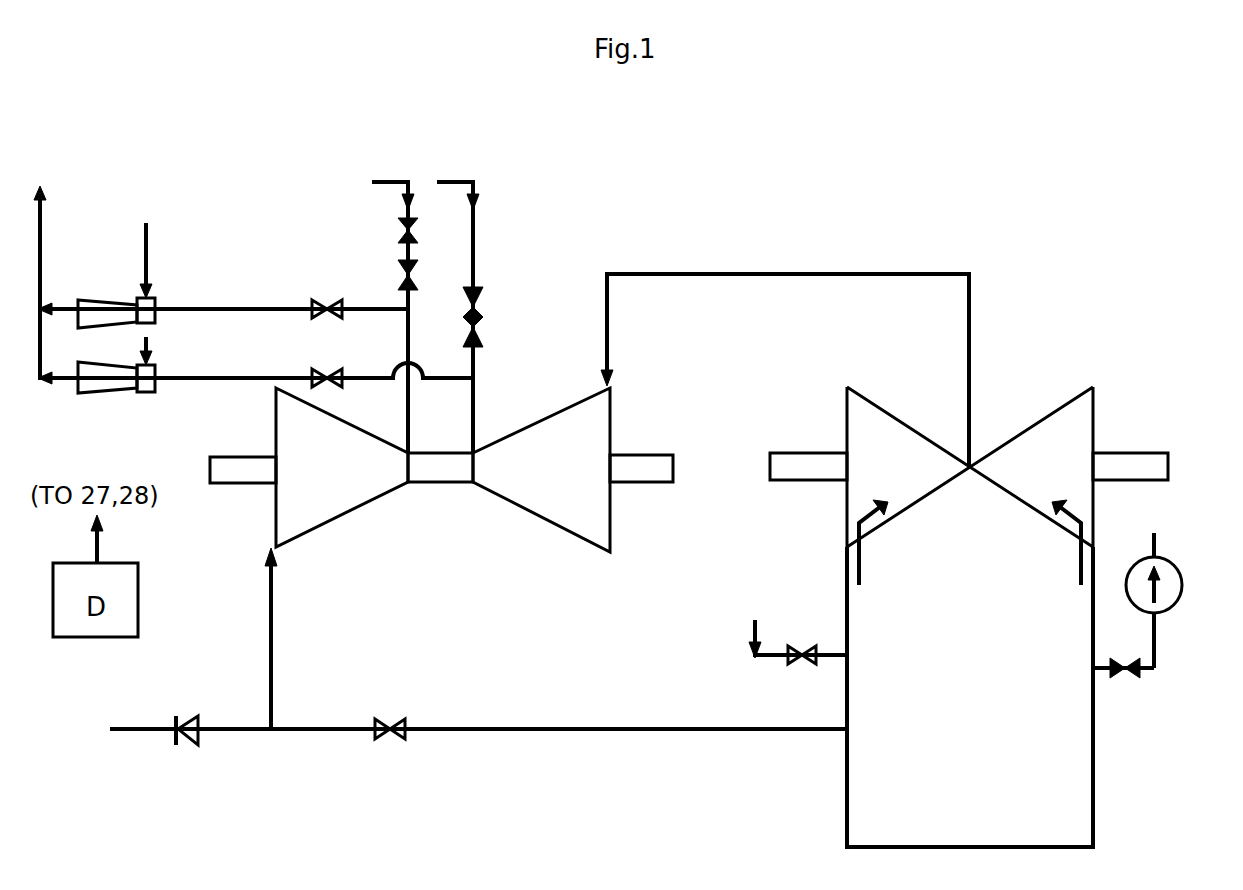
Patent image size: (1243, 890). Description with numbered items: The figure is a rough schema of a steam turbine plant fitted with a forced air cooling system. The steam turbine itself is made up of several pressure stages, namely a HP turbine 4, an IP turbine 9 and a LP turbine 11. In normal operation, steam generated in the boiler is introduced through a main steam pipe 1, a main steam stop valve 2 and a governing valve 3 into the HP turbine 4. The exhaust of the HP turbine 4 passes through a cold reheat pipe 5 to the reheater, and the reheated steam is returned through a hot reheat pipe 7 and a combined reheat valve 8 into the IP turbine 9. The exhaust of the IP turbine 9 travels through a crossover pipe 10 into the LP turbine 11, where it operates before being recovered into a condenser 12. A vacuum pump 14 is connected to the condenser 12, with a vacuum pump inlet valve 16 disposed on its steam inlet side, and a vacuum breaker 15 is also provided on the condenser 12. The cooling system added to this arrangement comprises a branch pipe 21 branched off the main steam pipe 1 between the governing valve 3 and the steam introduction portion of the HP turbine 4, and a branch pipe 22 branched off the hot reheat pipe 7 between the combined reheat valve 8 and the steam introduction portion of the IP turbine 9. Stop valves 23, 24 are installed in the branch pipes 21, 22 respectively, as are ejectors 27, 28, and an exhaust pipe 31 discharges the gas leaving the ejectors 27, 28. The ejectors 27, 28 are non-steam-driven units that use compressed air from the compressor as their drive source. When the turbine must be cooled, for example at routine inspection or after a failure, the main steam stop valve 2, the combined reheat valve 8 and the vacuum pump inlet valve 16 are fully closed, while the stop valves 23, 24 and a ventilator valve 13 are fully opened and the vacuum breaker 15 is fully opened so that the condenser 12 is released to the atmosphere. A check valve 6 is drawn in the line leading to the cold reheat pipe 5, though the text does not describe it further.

The main steam pipe 1 is at (406, 209).
The main steam stop valve 2 is at (406, 245).
The governing valve 3 is at (406, 283).
The HP turbine 4 is at (366, 505).
The cold reheat pipe 5 is at (273, 628).
The check valve 6 is at (197, 746).
The hot reheat pipe 7 is at (474, 253).
The combined reheat valve 8 is at (477, 303).
The IP turbine 9 is at (535, 513).
The crossover pipe 10 is at (700, 273).
The LP turbine 11 is at (895, 517).
The condenser 12 is at (848, 678).
The ventilator valve 13 is at (398, 740).
The vacuum pump 14 is at (1172, 604).
The vacuum breaker 15 is at (806, 662).
The vacuum pump inlet valve 16 is at (1113, 677).
The branch pipe 21 is at (240, 308).
The branch pipe 22 is at (238, 382).
The stop valve 23 is at (312, 303).
The stop valve 24 is at (332, 372).
The ejector 27 is at (115, 299).
The ejector 28 is at (137, 393).
The exhaust pipe 31 is at (46, 192).